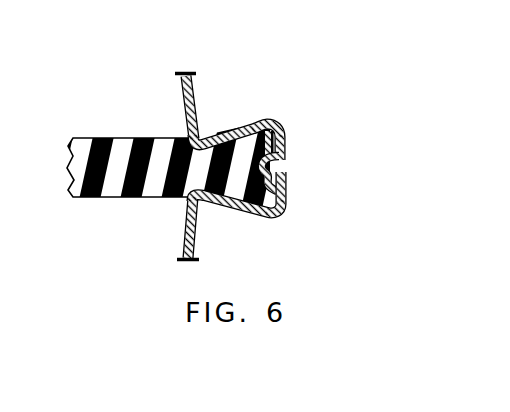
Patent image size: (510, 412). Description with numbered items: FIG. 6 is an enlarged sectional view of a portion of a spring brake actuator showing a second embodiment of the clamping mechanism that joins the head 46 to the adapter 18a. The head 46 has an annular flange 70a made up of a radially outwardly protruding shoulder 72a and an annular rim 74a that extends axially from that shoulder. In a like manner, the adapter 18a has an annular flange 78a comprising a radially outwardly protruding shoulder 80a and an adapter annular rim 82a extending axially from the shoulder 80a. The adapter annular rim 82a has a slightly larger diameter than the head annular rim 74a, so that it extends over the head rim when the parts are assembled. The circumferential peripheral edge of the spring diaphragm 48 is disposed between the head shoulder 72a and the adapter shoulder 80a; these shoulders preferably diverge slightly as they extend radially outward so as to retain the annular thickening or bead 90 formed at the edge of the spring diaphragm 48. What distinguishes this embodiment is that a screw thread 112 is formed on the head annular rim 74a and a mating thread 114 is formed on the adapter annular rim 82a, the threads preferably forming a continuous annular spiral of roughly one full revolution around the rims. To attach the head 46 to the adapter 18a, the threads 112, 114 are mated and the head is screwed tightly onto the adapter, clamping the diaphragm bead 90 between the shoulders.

The spring diaphragm 48 is at (121, 152).
The head 46 is at (183, 95).
The shoulder 72a is at (247, 96).
The screw thread 112 is at (251, 128).
The annular flange 70a is at (268, 112).
The annular rim 74a is at (284, 136).
The mating thread 114 is at (286, 177).
The adapter annular rim 82a is at (286, 194).
The annular flange 78a is at (288, 219).
The bead 90 is at (237, 184).
The shoulder 80a is at (237, 229).
The adapter 18a is at (184, 243).